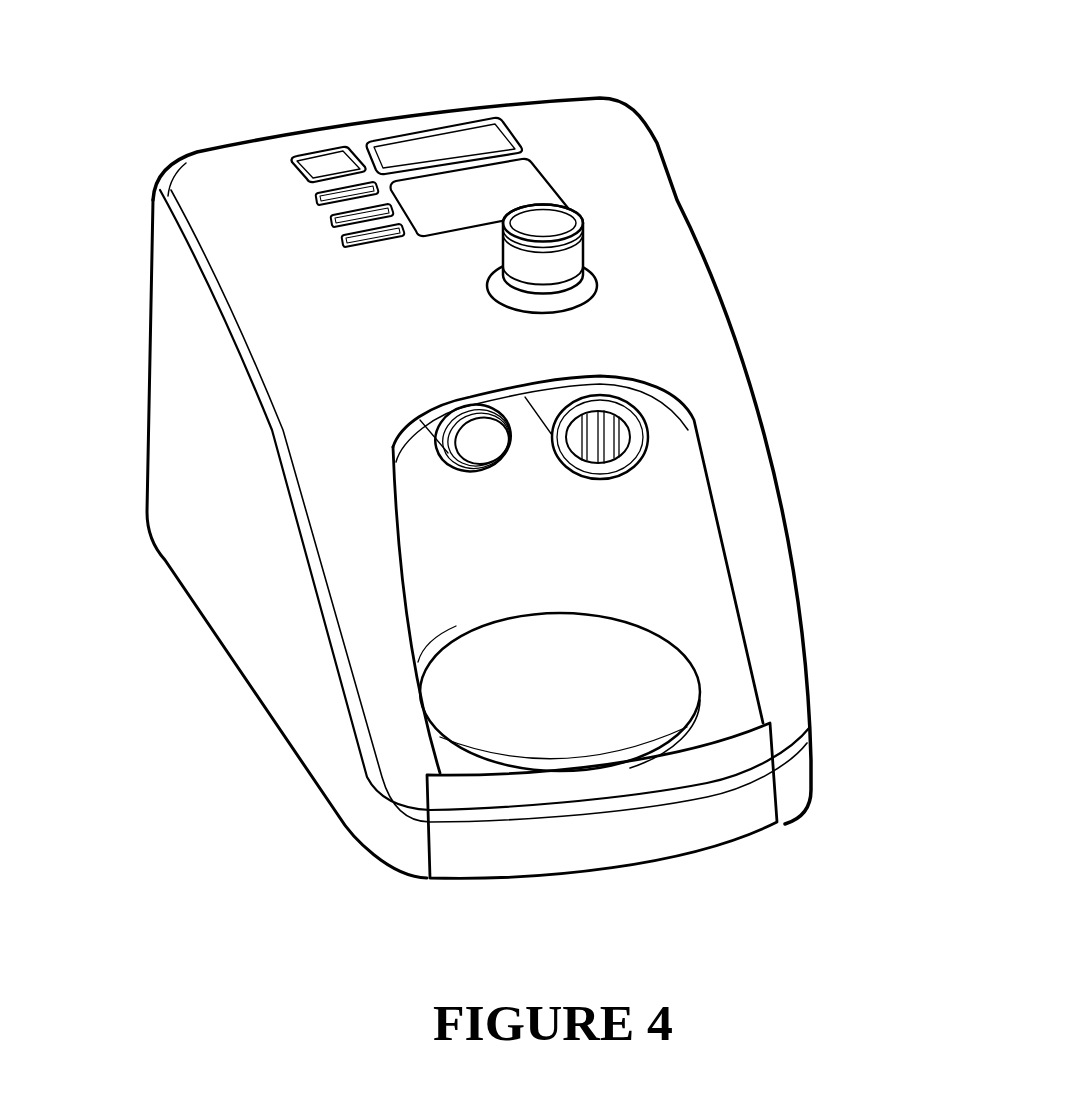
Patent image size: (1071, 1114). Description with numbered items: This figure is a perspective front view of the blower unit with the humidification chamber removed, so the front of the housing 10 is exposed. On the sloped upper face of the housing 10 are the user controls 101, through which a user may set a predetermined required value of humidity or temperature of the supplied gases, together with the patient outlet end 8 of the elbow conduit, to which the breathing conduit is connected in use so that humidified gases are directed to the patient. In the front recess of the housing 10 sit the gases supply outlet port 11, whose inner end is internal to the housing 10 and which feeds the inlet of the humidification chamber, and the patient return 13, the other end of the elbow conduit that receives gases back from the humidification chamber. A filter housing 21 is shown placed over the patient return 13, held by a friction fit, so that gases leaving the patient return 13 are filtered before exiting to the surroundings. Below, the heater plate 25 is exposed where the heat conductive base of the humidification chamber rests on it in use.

The housing 10 is at (630, 152).
The controls 101 is at (314, 192).
The patient outlet end 8 is at (560, 262).
The patient return 13 is at (633, 397).
The gases supply outlet port 11 is at (448, 455).
The filter housing 21 is at (627, 435).
The heater plate 25 is at (636, 720).